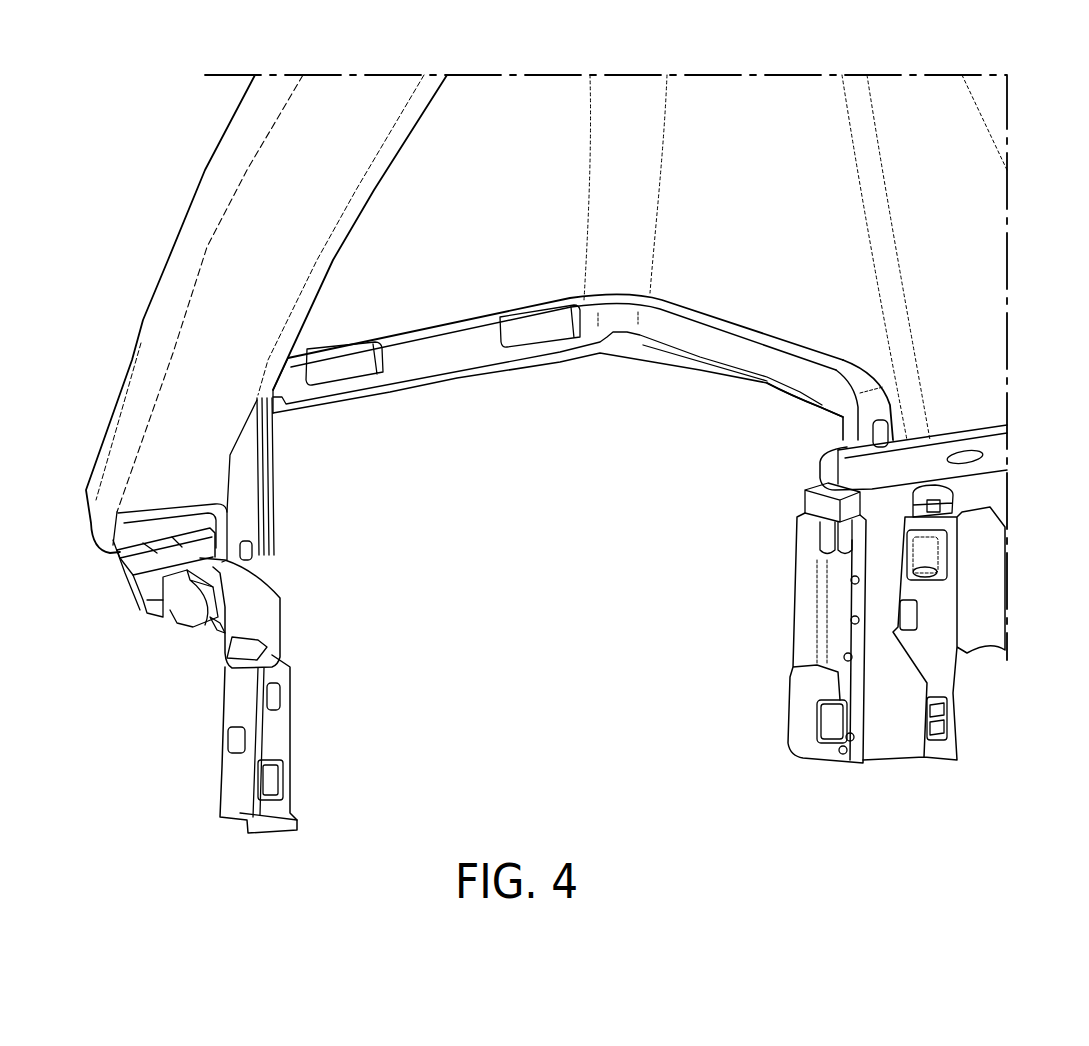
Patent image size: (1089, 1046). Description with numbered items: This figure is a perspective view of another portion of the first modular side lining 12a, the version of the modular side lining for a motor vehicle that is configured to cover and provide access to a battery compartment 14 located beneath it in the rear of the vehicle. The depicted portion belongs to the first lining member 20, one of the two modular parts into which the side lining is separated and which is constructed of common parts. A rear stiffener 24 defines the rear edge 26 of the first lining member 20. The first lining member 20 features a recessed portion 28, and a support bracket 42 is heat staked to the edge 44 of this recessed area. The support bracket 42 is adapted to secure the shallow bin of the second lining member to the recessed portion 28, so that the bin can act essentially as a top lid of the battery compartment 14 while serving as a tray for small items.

The first modular side lining 12a is at (776, 80).
The battery compartment 14 is at (376, 805).
The first lining member 20 is at (990, 478).
The rear stiffener 24 is at (221, 747).
The rear edge 26 is at (120, 601).
The recessed portion 28 is at (489, 423).
The support bracket 42 is at (775, 362).
The edge 44 is at (810, 400).